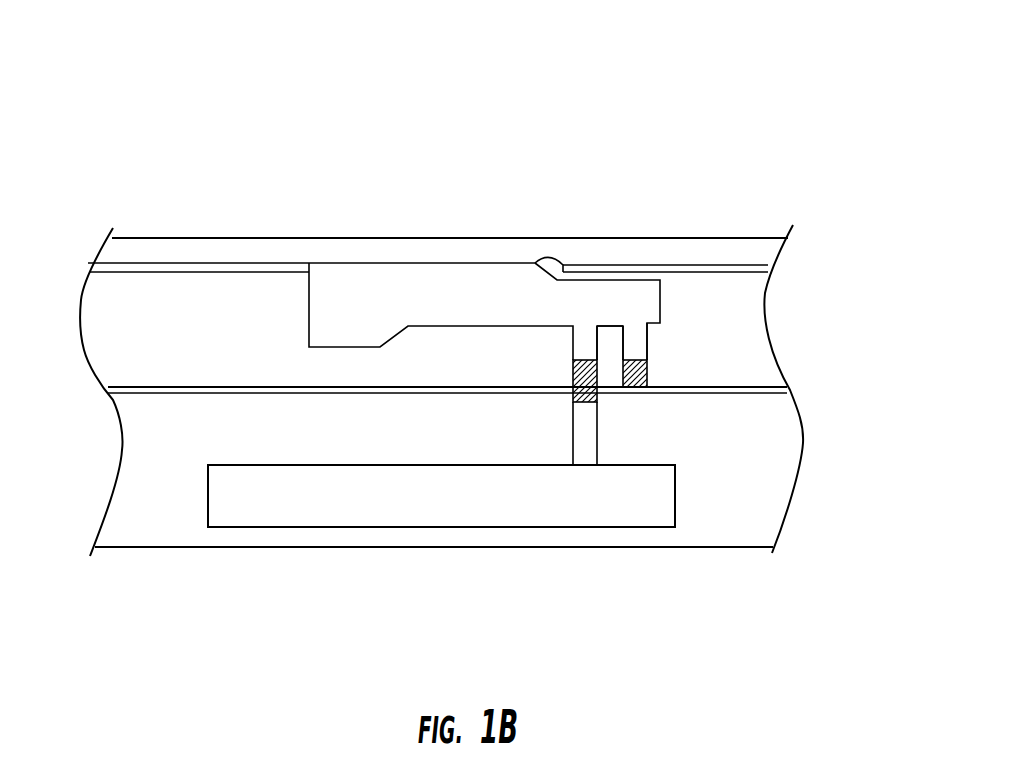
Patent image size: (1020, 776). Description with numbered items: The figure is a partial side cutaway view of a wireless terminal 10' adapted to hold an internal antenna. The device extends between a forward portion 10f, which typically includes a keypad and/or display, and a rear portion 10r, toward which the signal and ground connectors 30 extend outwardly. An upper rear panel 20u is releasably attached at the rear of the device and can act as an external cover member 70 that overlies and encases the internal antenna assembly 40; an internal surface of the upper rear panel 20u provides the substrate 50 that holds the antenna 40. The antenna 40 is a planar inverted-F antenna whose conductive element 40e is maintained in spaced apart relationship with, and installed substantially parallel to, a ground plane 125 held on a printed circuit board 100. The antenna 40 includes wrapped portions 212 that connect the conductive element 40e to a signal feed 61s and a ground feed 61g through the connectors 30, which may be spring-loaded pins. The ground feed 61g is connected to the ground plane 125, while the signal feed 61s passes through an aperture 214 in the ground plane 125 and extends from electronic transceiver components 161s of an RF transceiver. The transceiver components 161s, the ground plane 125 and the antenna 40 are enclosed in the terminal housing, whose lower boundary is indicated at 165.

The wireless terminal 10' is at (565, 40).
The upper rear panel 20u is at (180, 238).
The rear portion 10r is at (255, 238).
The substrate base 50 is at (150, 270).
The forward portion 10f is at (140, 547).
The external cover member 70 is at (748, 245).
The internal antenna assembly 40 is at (450, 278).
The conductive element 40e is at (510, 282).
The wrapped portions 212 is at (638, 333).
The aperture 214 is at (573, 387).
The signal and ground connectors 30 is at (647, 378).
The ground feed 61g is at (647, 360).
The ground plane 125 is at (747, 383).
The printed circuit board 100 is at (231, 398).
The signal feed 61s is at (600, 463).
The transceiver components 161s is at (665, 505).
The base plate 165 is at (702, 547).